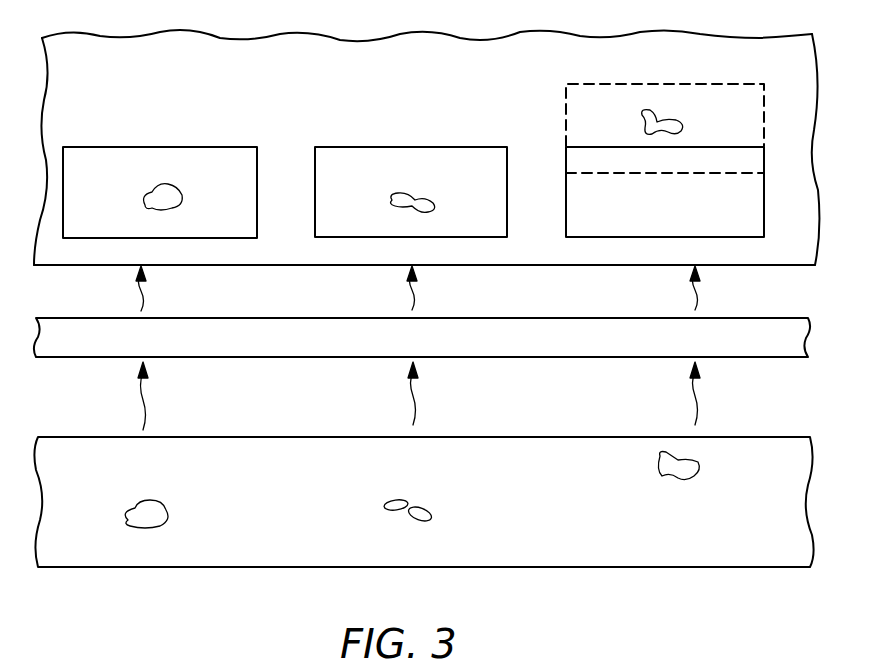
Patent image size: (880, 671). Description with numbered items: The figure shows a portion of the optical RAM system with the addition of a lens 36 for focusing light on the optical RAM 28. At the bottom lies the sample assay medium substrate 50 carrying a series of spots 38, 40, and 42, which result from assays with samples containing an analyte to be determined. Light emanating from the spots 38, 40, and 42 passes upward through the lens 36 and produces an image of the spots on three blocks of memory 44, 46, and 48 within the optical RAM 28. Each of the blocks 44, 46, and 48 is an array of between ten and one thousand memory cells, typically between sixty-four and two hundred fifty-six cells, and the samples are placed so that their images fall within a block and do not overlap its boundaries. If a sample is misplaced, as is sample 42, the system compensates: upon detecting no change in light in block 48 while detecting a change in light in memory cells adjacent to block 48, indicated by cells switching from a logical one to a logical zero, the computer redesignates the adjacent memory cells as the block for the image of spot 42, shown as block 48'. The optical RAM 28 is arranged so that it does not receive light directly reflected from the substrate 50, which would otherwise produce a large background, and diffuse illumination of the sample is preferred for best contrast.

The optical RAM 28 is at (528, 34).
The lens 36 is at (757, 318).
The spot 38 is at (165, 510).
The spot 40 is at (430, 507).
The spot 42 is at (700, 463).
The block of memory 44 is at (168, 147).
The block of memory 46 is at (405, 147).
The block of memory 48 is at (683, 192).
The redesignated block 48' is at (680, 96).
The sample assay medium substrate 50 is at (757, 437).